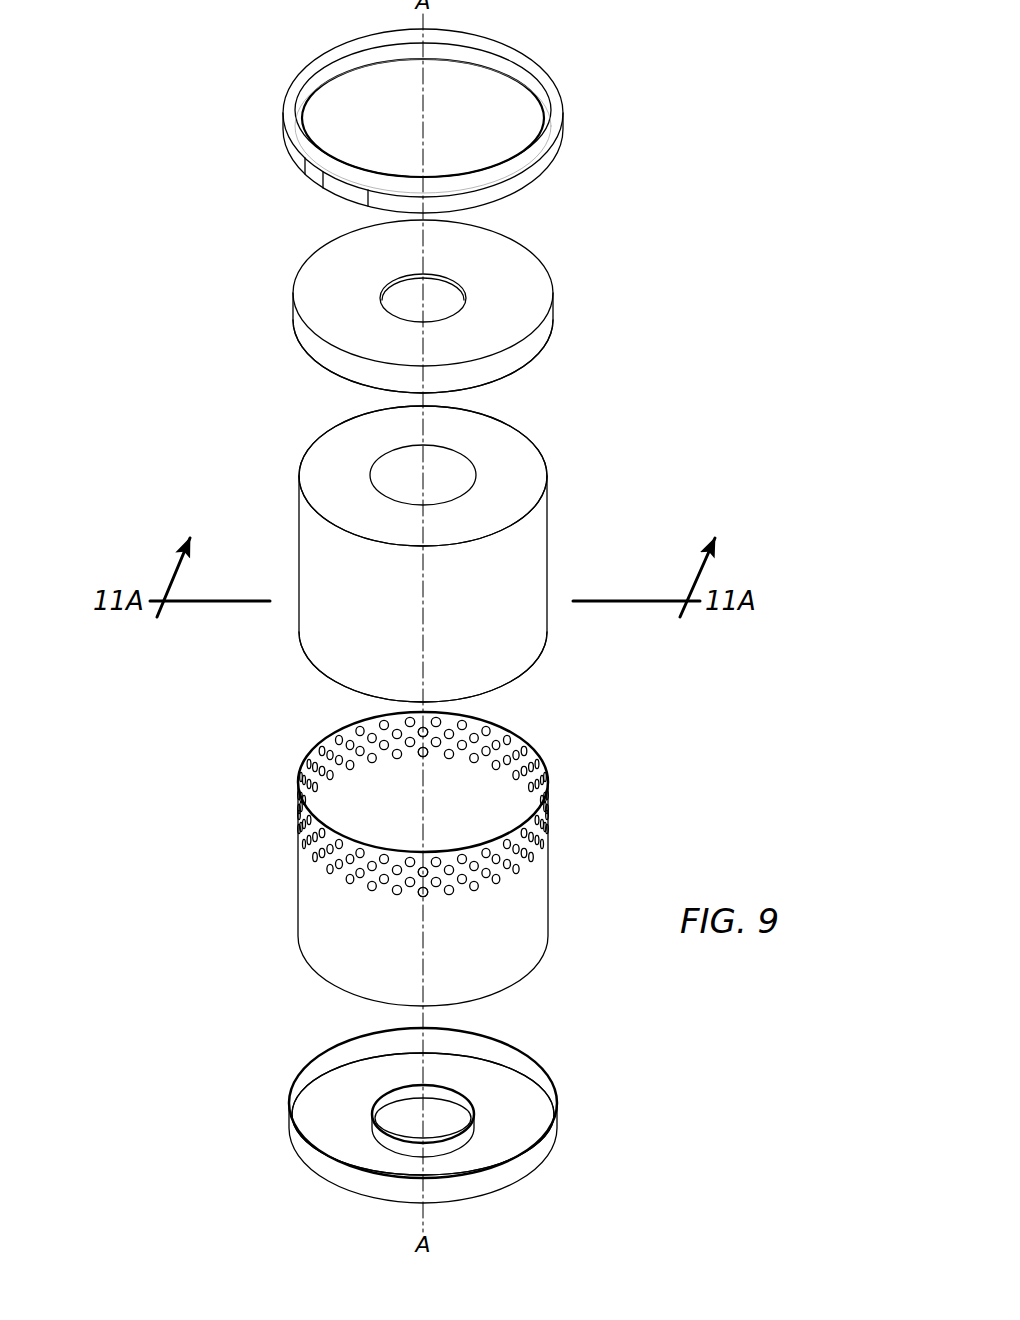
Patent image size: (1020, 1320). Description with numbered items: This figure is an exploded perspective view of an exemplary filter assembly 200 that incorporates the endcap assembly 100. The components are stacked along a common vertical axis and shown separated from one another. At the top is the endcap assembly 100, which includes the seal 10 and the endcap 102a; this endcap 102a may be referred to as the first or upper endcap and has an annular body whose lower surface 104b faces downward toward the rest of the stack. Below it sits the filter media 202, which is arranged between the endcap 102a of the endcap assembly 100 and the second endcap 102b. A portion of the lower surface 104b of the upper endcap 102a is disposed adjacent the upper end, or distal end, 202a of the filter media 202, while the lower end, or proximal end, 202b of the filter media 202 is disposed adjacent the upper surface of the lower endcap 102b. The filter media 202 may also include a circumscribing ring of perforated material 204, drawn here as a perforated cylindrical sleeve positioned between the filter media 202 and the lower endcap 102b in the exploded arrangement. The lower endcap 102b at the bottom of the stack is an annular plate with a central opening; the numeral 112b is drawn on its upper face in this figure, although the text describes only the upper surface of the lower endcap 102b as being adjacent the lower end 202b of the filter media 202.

The filter assembly 200 is at (221, 56).
The seal 10 is at (571, 114).
The endcap assembly 100 is at (656, 113).
The endcap 102a is at (557, 297).
The lower surface 104b is at (318, 358).
The filter media 202 is at (561, 543).
The upper end 202a is at (513, 462).
The lower end 202b is at (318, 668).
The circumscribing ring of perforated material 204 is at (559, 840).
The top surface of lower end plate 112b is at (505, 1090).
The endcap 102b is at (566, 1110).